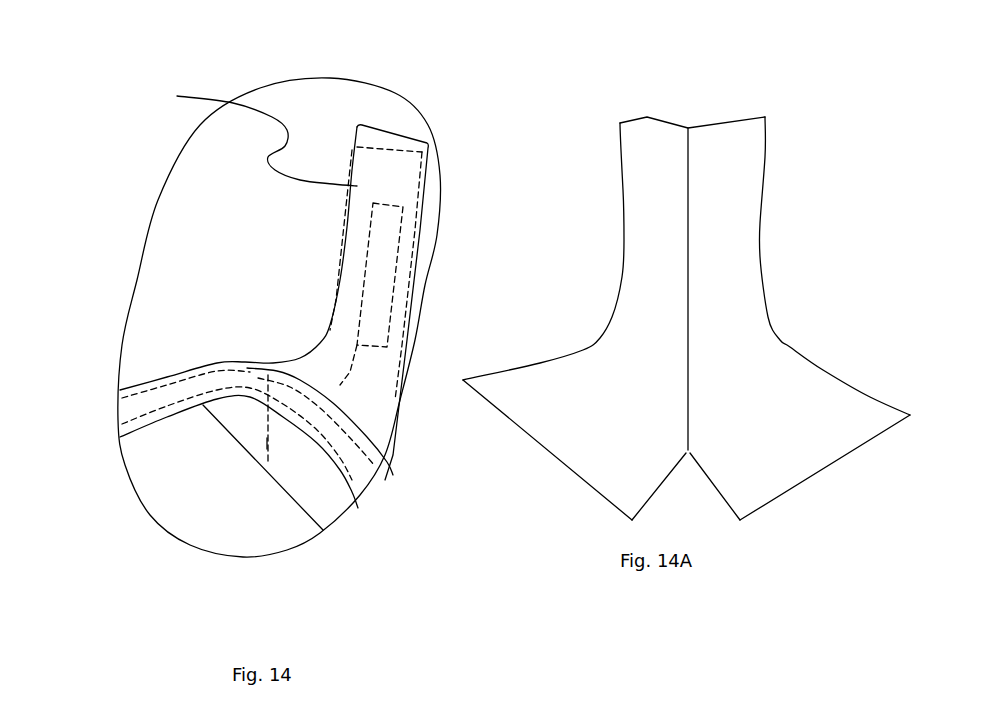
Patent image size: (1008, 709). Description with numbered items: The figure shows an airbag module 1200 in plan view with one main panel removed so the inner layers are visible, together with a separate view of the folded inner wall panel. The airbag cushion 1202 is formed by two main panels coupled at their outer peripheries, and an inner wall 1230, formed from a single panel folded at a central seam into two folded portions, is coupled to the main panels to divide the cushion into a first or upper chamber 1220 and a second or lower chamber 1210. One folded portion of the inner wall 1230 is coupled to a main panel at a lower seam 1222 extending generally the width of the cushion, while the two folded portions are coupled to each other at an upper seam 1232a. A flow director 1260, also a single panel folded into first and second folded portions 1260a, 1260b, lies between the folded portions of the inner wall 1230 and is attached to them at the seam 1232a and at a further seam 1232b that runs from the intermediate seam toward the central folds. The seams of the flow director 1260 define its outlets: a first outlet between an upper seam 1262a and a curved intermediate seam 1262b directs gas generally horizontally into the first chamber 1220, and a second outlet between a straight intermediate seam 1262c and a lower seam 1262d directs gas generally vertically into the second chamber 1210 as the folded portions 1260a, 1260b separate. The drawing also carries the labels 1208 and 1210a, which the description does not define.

In FIG. 14, the airbag module 1200 is at (458, 110).
In FIG. 14, the airbag cushion 1202 is at (293, 87).
In FIG. 14, the fastener pocket 1208 is at (383, 270).
In FIG. 14, the second (or lower) chamber 1210 is at (222, 494).
In FIG. 14, the side edge of lower portion 1210a is at (433, 213).
In FIG. 14, the first (or upper) chamber 1220 is at (262, 251).
In FIG. 14, the first or lower seam 1222 is at (353, 482).
In FIG. 14, the inner wall 1230 is at (137, 403).
In FIG. 14, the second or upper seam 1232a is at (163, 383).
In FIG. 14, the seam 1232b is at (402, 412).
In FIG. 14, the flow director 1260 is at (403, 183).
In FIG. 14A, the flow director 1260 is at (722, 160).
In FIG. 14, the first folded portion of the flow director 1260a is at (238, 136).
In FIG. 14A, the first folded portion of the flow director 1260a is at (742, 295).
In FIG. 14, the second folded portion of the flow director 1260b is at (290, 500).
In FIG. 14A, the second folded portion of the flow director 1260b is at (651, 318).
In FIG. 14, the first outlet / first (or upper) seam 1262a is at (400, 150).
In FIG. 14, the second outlet / second (or intermediate) seam 1262b is at (303, 358).
In FIG. 14, the third (or intermediate) seam 1262c is at (267, 443).
In FIG. 14, the fourth (or lower) seam 1262d is at (340, 517).